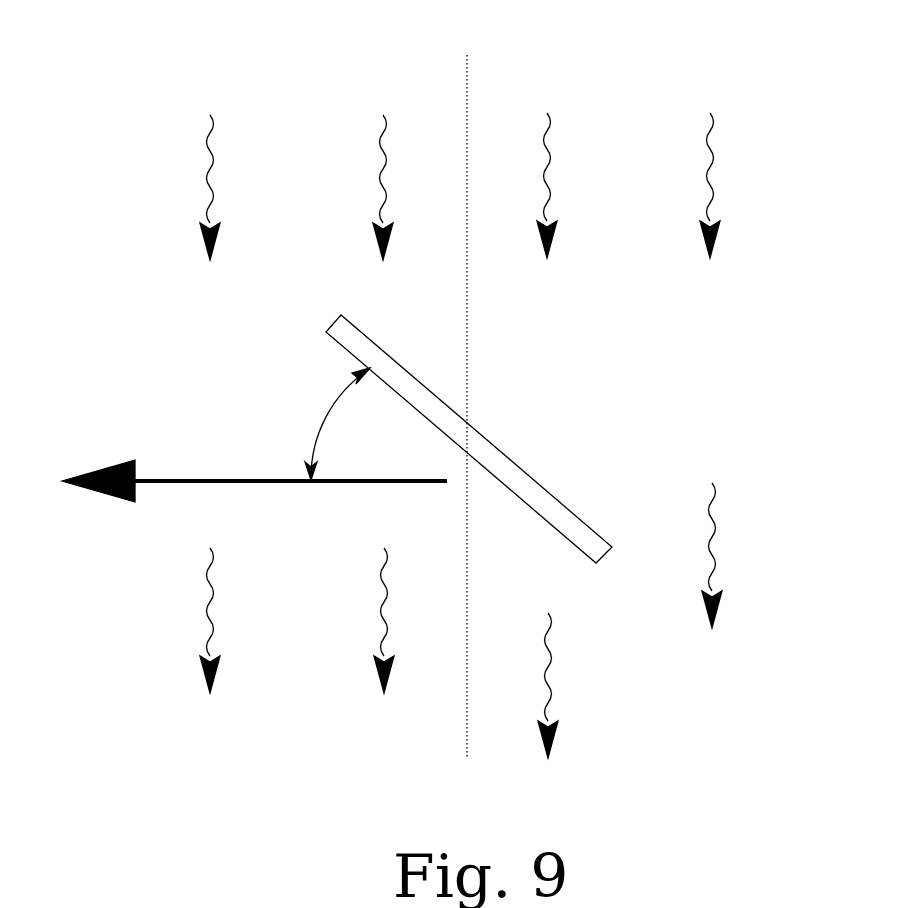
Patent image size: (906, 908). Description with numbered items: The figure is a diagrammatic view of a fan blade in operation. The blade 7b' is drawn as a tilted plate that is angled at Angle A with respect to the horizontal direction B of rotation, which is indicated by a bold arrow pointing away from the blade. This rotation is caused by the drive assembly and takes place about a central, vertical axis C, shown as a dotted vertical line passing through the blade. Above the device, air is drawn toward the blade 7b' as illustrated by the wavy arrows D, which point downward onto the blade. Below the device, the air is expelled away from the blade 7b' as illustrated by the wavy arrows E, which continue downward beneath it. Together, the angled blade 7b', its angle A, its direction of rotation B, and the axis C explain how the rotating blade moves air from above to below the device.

The blade 7b' is at (469, 439).
The Angle A is at (336, 424).
The horizontal direction of rotation B is at (203, 478).
The central, vertical axis C is at (468, 90).
The arrows D is at (712, 140).
The arrows E is at (714, 505).